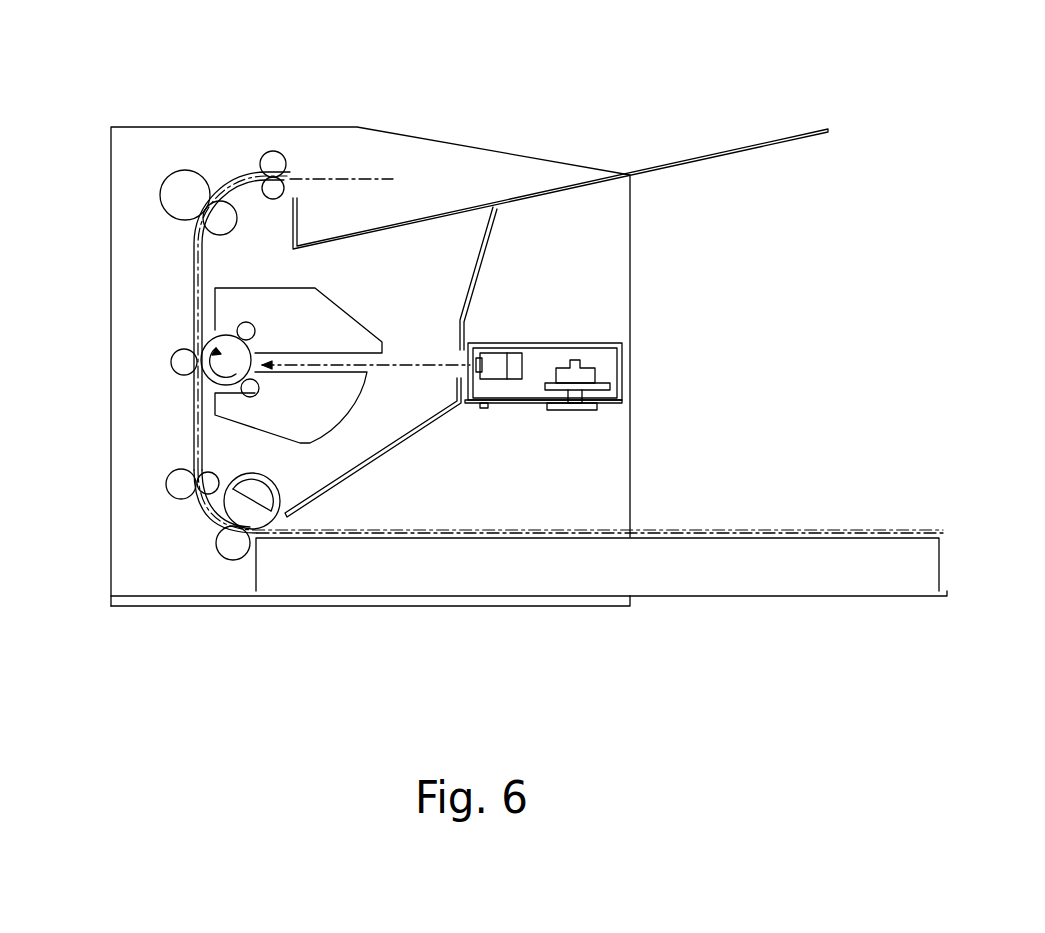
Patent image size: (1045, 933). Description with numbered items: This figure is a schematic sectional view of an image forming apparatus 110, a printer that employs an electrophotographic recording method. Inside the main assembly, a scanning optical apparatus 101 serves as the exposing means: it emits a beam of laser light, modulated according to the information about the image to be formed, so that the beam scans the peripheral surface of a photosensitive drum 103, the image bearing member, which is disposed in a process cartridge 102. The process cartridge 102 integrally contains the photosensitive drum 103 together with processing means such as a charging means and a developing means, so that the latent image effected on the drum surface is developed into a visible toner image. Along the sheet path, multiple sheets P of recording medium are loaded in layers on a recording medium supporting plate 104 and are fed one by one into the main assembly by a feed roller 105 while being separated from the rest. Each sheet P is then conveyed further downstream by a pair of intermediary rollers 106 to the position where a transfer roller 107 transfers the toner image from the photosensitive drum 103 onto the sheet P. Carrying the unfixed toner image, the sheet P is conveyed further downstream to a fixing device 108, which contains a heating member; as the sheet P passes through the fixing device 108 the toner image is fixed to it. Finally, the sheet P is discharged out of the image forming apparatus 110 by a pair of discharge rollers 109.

The scanning optical apparatus 101 is at (600, 353).
The process cartridge 102 is at (352, 314).
The photosensitive drum 103 is at (228, 338).
The recording medium supporting plate 104 is at (682, 597).
The feed roller 105 is at (275, 490).
The pair of intermediary rollers 106 is at (177, 490).
The transfer roller 107 is at (182, 358).
The fixing device 108 is at (188, 183).
The pair of discharge rollers 109 is at (273, 160).
The image forming apparatus 110 is at (136, 138).
The sheet of recording medium P is at (741, 533).